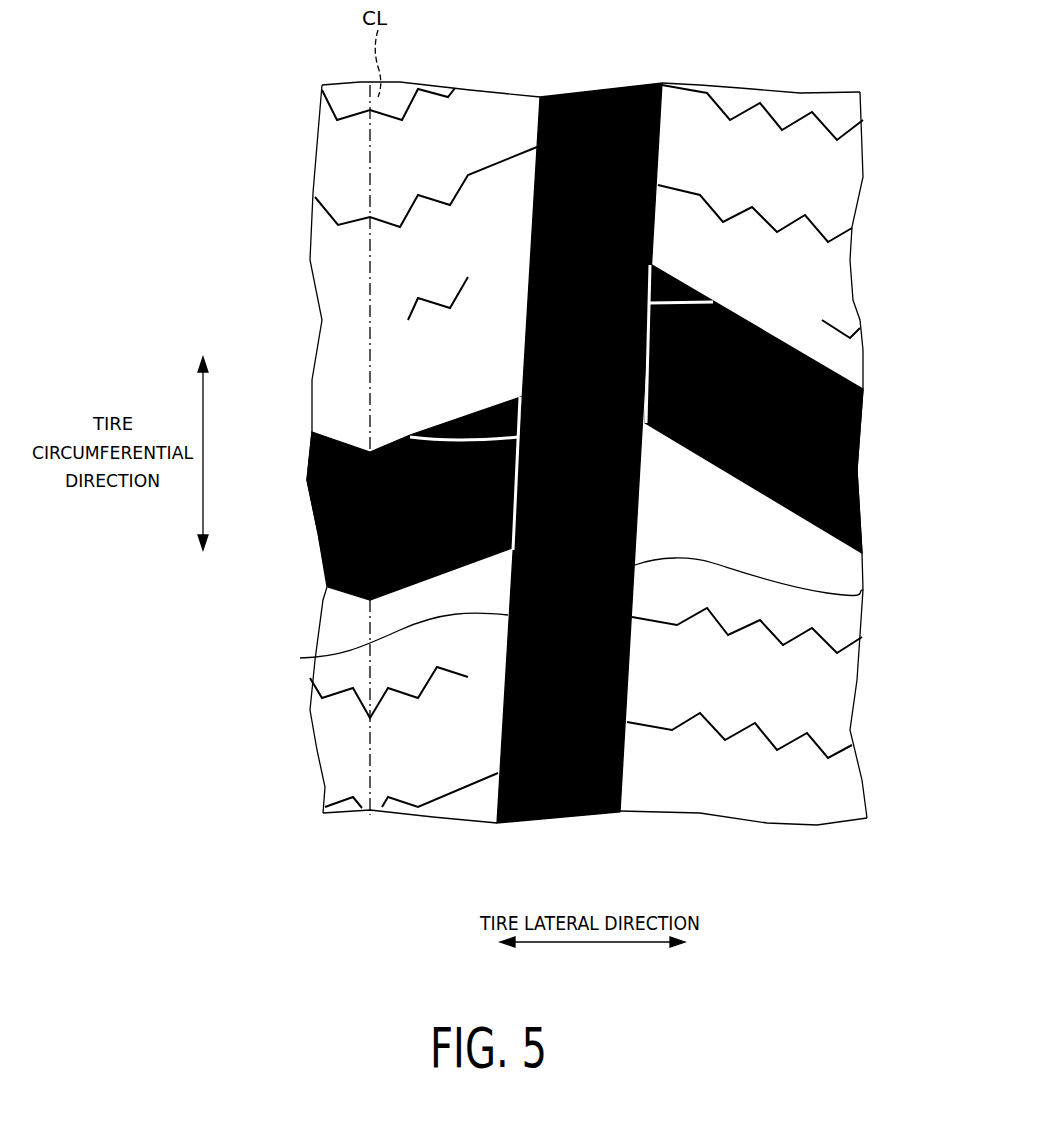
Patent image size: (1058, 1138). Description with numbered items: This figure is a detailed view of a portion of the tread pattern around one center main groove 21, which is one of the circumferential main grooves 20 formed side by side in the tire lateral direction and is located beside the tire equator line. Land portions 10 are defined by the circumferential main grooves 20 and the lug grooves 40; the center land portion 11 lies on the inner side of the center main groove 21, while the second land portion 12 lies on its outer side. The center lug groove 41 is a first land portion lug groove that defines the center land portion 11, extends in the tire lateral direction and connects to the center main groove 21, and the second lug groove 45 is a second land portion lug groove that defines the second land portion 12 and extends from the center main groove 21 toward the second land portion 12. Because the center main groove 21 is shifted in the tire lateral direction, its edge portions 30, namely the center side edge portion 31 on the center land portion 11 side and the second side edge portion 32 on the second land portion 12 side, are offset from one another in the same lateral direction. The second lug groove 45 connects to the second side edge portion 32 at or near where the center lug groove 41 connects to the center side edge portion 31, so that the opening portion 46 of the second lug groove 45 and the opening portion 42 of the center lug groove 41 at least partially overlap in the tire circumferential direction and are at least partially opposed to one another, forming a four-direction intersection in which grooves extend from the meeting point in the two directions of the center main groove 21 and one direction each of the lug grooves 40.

The land portion 10 is at (589, 173).
The center land portion 11 is at (435, 127).
The second land portion 12 is at (767, 138).
The circumferential main groove 20 is at (579, 415).
The center main groove 21 is at (588, 113).
The edge portion 30 is at (582, 613).
The center side edge portion 31 is at (360, 641).
The second side edge portion 32 is at (793, 579).
The lug groove 40 is at (589, 432).
The center lug groove 41 is at (374, 498).
The opening portion 42 is at (384, 473).
The second lug groove 45 is at (798, 409).
The opening portion 46 is at (713, 302).